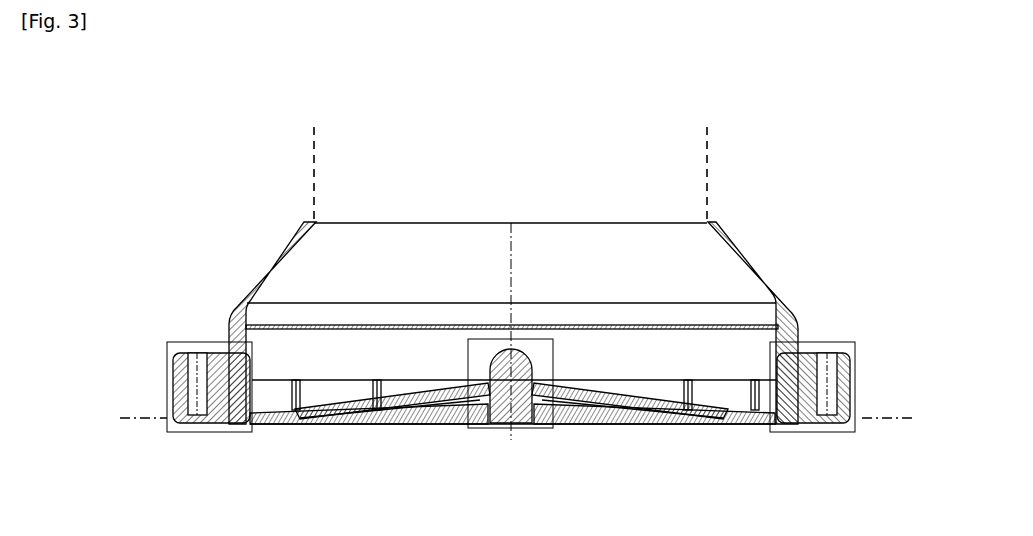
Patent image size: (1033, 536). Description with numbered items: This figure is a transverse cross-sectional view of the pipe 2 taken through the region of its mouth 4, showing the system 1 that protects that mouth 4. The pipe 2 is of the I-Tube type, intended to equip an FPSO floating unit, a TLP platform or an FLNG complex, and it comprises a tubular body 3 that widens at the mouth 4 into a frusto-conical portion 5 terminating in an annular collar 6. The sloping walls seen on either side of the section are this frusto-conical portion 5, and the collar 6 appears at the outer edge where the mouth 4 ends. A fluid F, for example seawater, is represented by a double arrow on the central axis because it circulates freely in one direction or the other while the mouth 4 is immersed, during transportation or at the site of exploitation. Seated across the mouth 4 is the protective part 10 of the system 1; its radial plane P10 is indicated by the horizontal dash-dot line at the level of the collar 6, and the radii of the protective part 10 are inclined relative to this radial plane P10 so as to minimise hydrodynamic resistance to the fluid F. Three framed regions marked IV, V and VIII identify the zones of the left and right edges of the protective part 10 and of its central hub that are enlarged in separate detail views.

The system 1 is at (163, 263).
The pipe 2 is at (268, 198).
The tubular body 3 is at (710, 182).
The mouth 4 is at (367, 443).
The frusto-conical portion 5 is at (762, 272).
The annular collar 6 is at (802, 375).
The protective part 10 is at (160, 360).
The fluid F is at (510, 152).
The radial plane P10 is at (488, 418).
The detail IV is at (170, 430).
The detail V is at (855, 432).
The detail VIII is at (552, 428).